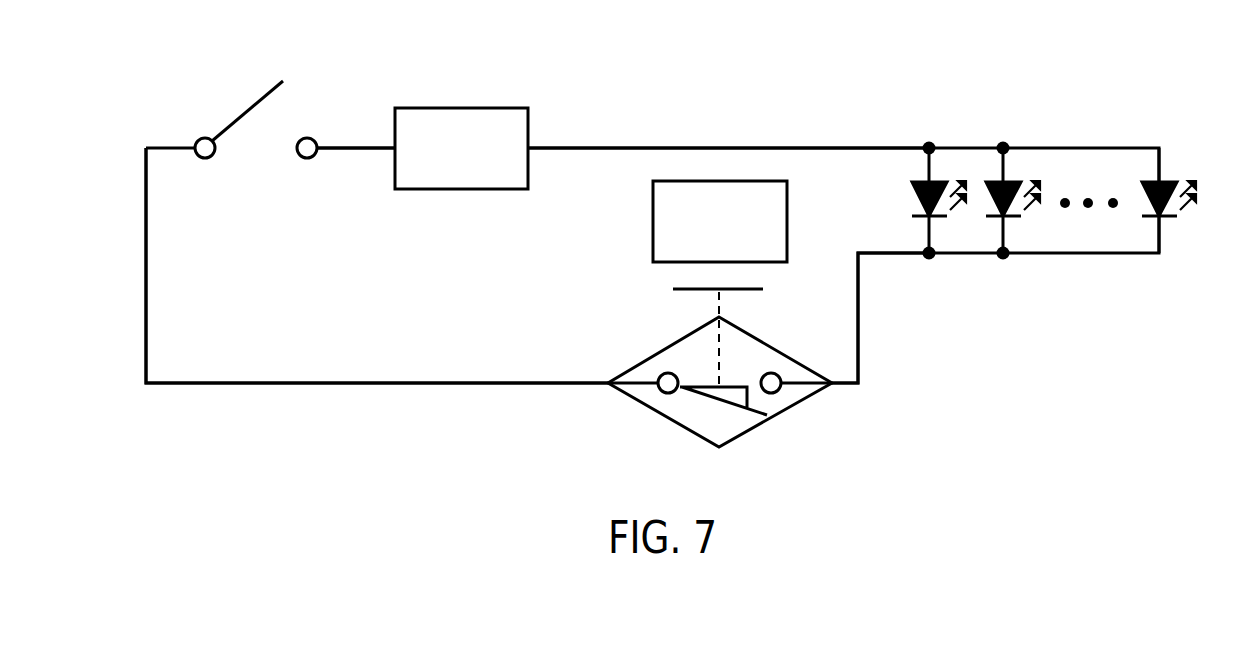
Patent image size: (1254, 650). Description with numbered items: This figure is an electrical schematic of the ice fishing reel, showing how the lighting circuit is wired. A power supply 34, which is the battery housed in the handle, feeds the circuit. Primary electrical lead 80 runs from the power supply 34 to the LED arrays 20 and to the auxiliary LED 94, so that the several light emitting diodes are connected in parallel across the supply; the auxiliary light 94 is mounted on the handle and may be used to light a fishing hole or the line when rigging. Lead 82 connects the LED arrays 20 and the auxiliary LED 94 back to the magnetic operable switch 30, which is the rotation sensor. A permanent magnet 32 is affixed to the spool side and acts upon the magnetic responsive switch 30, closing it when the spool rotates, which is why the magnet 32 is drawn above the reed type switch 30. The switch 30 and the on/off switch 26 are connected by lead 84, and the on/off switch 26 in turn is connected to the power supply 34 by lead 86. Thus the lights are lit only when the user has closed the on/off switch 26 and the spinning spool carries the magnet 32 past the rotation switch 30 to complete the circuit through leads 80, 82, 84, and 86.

The on/off switch 26 is at (243, 115).
The power supply 34 is at (463, 108).
The electrical lead 86 is at (352, 148).
The permanent magnet 32 is at (719, 181).
The primary electrical lead 80 is at (845, 148).
The LED arrays 20 is at (1007, 186).
The auxiliary light 94 is at (1163, 182).
The electrical lead 82 is at (858, 320).
The rotation switch 30 is at (782, 415).
The electrical lead 84 is at (368, 385).